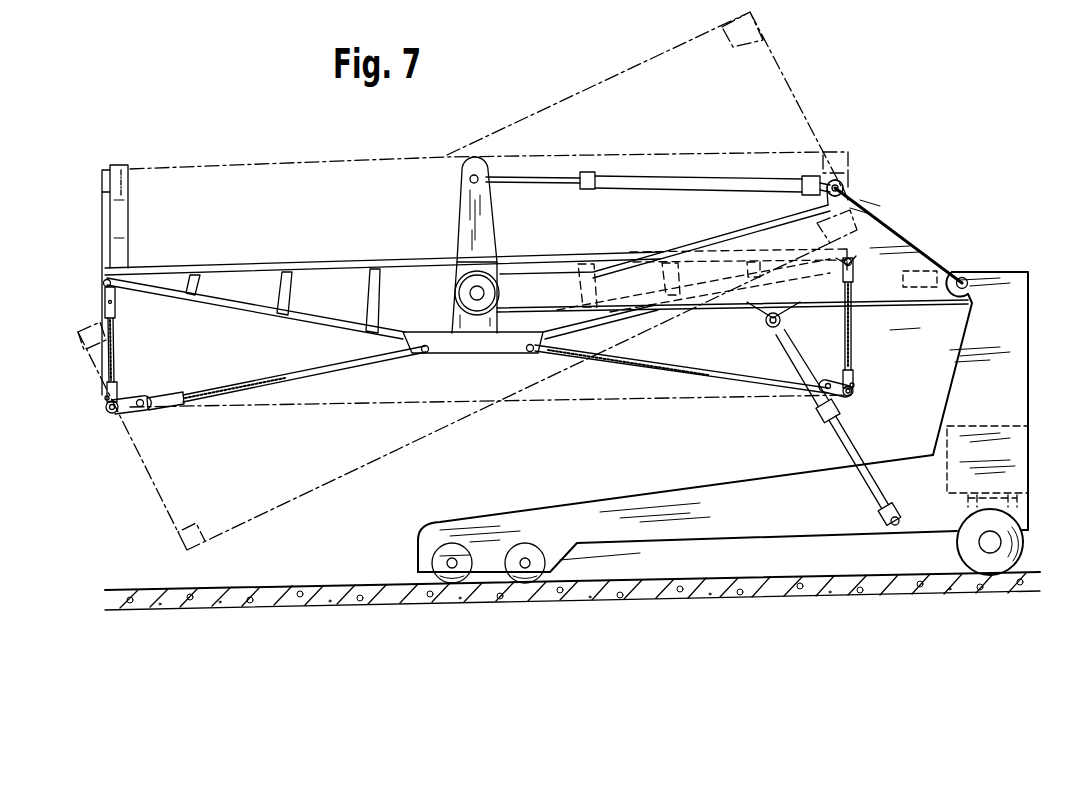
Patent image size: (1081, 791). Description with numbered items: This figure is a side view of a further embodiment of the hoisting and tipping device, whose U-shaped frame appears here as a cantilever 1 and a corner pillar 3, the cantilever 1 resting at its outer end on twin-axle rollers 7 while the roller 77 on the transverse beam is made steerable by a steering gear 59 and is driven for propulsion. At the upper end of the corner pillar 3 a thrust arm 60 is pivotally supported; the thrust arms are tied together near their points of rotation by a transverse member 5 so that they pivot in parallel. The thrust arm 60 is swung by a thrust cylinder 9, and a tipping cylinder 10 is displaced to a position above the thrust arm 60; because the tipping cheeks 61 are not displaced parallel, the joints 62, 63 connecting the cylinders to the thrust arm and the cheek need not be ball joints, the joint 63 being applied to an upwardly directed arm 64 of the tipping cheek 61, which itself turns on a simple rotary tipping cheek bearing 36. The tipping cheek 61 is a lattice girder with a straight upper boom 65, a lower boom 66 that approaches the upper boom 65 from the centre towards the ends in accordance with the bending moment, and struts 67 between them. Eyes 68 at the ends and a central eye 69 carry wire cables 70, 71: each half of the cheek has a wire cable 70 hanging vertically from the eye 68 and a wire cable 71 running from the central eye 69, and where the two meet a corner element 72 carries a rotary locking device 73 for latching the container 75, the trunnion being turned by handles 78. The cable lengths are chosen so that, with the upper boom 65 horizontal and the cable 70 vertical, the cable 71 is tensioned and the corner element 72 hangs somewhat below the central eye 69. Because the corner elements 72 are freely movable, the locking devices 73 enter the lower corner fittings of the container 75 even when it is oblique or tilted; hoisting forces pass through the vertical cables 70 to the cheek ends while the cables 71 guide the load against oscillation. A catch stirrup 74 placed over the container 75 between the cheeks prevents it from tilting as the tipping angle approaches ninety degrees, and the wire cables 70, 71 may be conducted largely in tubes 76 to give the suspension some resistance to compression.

The cantilever 1 is at (752, 526).
The corner pillar 3 is at (968, 350).
The transverse member 5 is at (940, 268).
The twin-axle rollers 7 is at (508, 583).
The thrust cylinder 9 is at (830, 426).
The tipping cylinder 10 is at (650, 188).
The tipping cheek bearing 36 is at (492, 283).
The steering gear 59 is at (1005, 435).
The thrust arm 60 is at (905, 238).
The tipping cheek 61 is at (329, 254).
The joint 62 is at (848, 182).
The joint 63 is at (473, 164).
The upwardly directed arm 64 is at (465, 200).
The upper boom 65 is at (260, 267).
The lower boom 66 is at (252, 313).
The struts 67 is at (377, 298).
The eye 68 is at (105, 278).
The central eye 69 is at (425, 353).
The wire cable 70 is at (116, 350).
The wire cable 71 is at (237, 383).
The corner element 72 is at (125, 417).
The rotary locking device 73 is at (106, 410).
The catch stirrup 74 is at (128, 218).
The container 75 is at (216, 172).
The tubes 76 is at (114, 302).
The roller 77 is at (968, 547).
The handles 78 is at (107, 395).